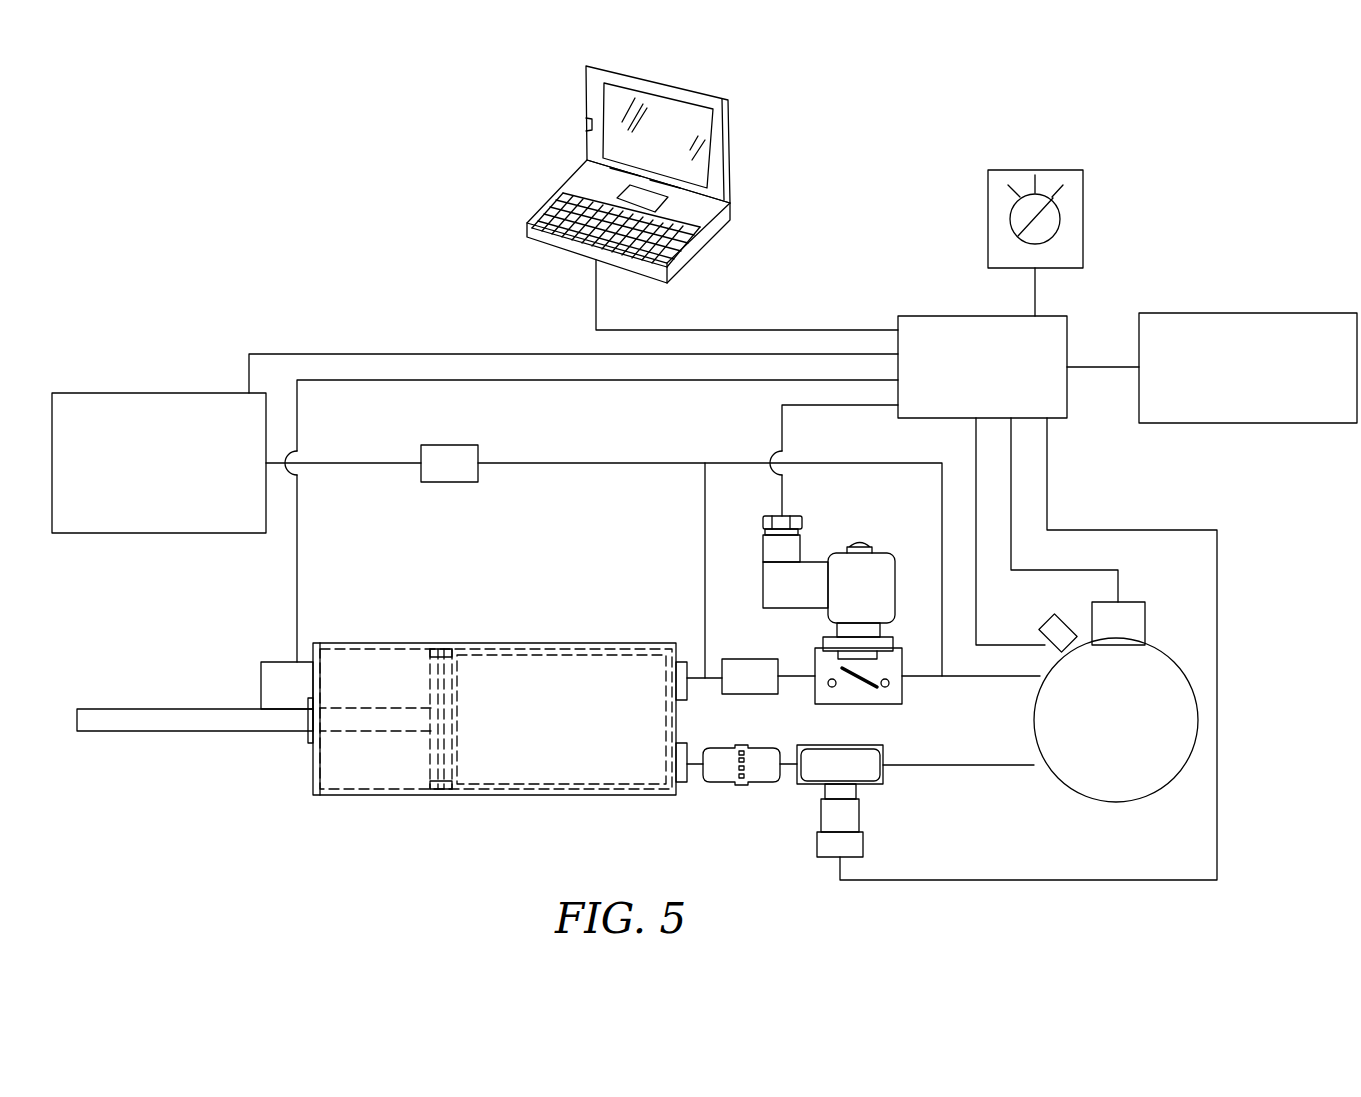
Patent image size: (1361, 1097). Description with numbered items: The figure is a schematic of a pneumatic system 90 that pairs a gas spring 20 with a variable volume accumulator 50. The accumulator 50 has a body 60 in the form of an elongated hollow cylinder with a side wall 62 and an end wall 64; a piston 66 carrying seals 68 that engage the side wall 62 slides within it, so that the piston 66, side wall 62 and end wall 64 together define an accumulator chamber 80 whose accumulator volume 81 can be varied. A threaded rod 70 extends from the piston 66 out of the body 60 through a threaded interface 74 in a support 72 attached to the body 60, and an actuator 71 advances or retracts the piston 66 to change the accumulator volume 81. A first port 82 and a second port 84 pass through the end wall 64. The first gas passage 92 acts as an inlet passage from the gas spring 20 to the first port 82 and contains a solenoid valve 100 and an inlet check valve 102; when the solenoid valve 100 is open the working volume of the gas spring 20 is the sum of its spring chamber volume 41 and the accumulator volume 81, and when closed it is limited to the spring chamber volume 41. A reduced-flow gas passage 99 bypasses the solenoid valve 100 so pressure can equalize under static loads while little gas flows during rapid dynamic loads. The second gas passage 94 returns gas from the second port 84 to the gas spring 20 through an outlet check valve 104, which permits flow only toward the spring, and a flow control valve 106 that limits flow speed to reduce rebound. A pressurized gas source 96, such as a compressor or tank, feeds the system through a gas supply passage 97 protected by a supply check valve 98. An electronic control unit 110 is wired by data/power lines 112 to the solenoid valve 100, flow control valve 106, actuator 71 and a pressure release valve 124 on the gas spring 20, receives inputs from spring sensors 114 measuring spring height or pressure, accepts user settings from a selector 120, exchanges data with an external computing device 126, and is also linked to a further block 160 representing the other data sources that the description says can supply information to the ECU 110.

The pneumatic system 90 is at (293, 150).
The external computing device 126 is at (586, 182).
The selector 120 is at (1083, 200).
The electronic control unit 110 is at (945, 316).
The controller 160 is at (1240, 313).
The data/power lines 112 is at (470, 380).
The pressurized gas source 96 is at (115, 393).
The gas supply passage 97 is at (515, 463).
The supply check valve 98 is at (452, 445).
The reduced-flow gas passage 99 is at (705, 530).
The solenoid valve 100 is at (882, 570).
The inlet check valve 102 is at (745, 659).
The first gas passage 92 is at (920, 676).
The body 60 is at (512, 643).
The accumulator volume 81 is at (625, 786).
The piston 66 is at (440, 655).
The seals 68 is at (433, 790).
The first port 82 is at (685, 660).
The second port 84 is at (685, 785).
The end wall 64 is at (676, 720).
The side wall 62 is at (525, 797).
The accumulator chamber 80 is at (570, 762).
The actuator 71 is at (282, 675).
The threaded rod 70 is at (158, 709).
The threaded interface 74 is at (308, 735).
The support 72 is at (315, 775).
The variable volume accumulator 50 is at (340, 808).
The outlet check valve 104 is at (760, 770).
The flow control valve 106 is at (840, 745).
The second gas passage 94 is at (950, 765).
The gas spring 20 is at (1182, 665).
The spring chamber volume 41 is at (1108, 768).
The spring sensors 114 is at (1130, 602).
The pressure release valve 124 is at (1050, 615).